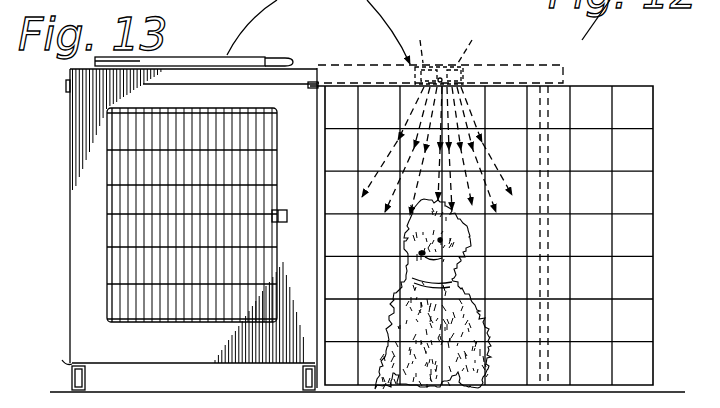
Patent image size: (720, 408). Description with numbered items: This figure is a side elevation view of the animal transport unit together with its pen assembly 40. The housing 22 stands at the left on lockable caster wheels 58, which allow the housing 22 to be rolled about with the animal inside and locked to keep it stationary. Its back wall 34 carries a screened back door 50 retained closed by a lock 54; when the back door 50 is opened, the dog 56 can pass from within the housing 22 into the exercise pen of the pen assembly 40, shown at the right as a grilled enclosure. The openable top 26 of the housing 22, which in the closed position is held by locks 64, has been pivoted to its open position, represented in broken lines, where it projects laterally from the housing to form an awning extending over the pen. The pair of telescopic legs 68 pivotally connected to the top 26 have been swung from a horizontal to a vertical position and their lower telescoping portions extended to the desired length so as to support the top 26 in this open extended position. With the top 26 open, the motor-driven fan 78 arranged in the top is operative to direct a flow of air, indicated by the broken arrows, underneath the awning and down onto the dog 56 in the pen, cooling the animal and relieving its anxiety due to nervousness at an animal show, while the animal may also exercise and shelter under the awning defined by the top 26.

The housing 22 is at (70, 205).
The openable top 26 is at (345, 82).
The back wall 34 is at (90, 249).
The pen assembly 40 is at (657, 181).
The back door 50 is at (142, 292).
The lock 54 is at (287, 210).
The dog 56 is at (455, 312).
The lockable caster wheels 58 is at (303, 372).
The lock 64 is at (68, 88).
The telescopic legs 68 is at (203, 60).
The motor-driven fan 78 is at (443, 63).